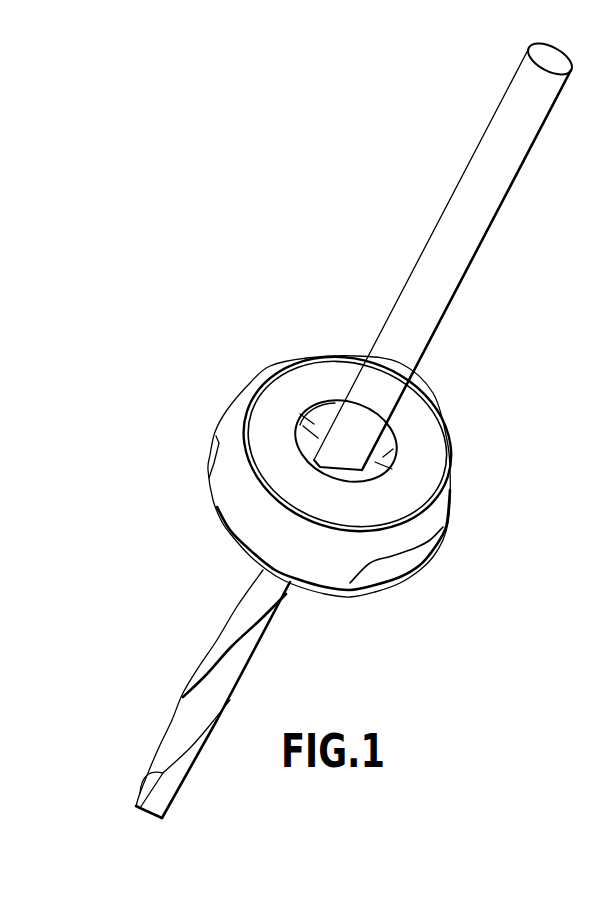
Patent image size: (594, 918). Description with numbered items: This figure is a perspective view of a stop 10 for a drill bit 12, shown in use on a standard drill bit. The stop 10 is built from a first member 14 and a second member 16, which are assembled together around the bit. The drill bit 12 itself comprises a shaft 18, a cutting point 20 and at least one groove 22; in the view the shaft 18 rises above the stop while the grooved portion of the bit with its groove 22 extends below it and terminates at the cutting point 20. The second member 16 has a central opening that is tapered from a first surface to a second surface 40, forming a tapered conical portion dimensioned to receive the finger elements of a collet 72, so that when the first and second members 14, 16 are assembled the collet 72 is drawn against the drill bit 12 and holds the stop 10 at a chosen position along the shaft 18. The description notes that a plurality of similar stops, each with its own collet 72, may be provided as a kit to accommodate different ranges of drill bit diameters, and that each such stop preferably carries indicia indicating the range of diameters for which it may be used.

The stop 10 is at (246, 352).
The drill bit 12 is at (500, 205).
The first member 14 is at (225, 516).
The second member 16 is at (443, 446).
The shaft 18 is at (472, 183).
The cutting point 20 is at (152, 823).
The groove 22 is at (172, 739).
The second surface 40 is at (299, 361).
The collet 72 is at (405, 537).